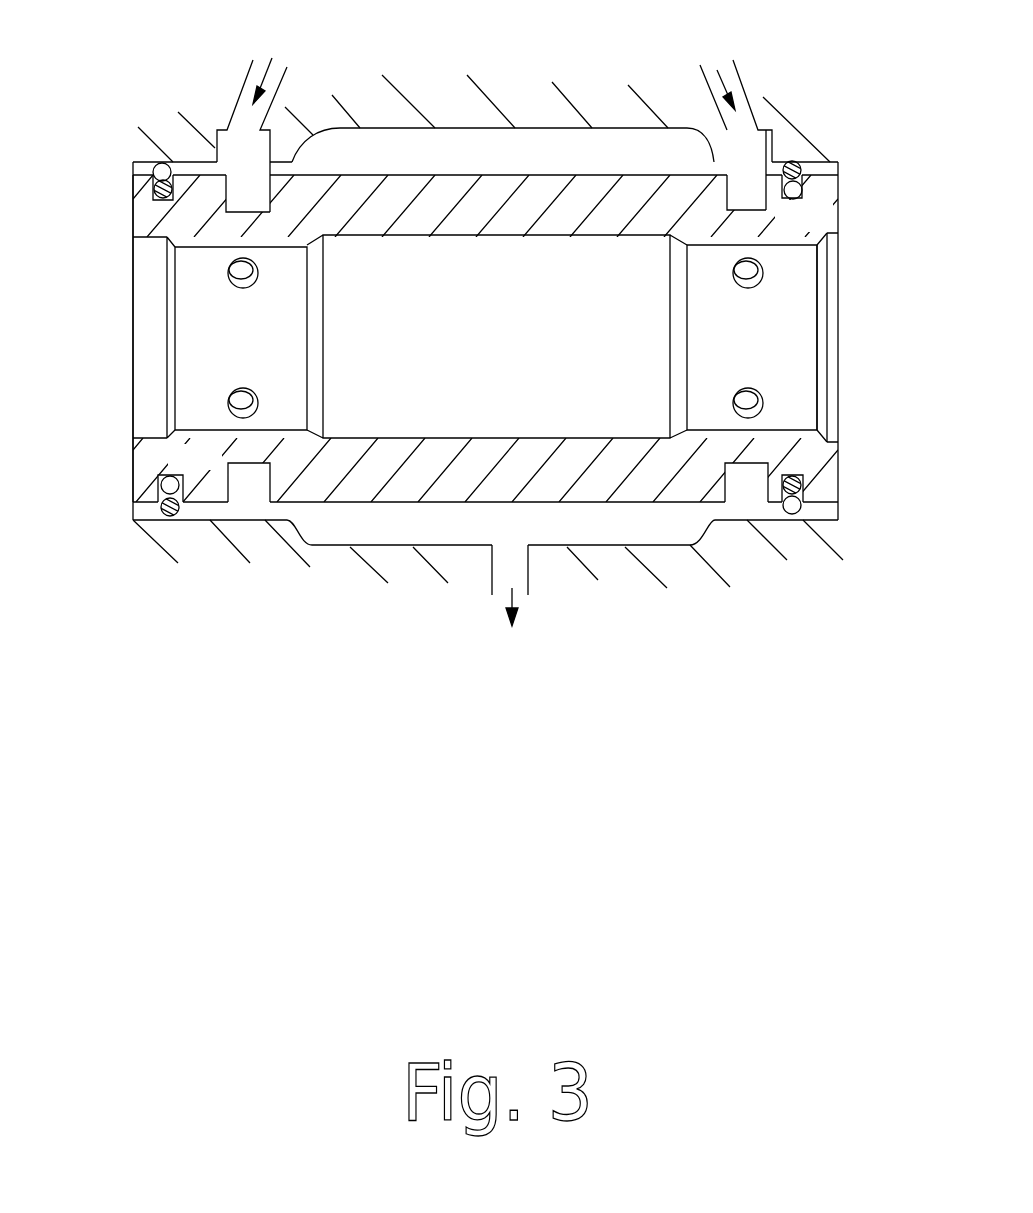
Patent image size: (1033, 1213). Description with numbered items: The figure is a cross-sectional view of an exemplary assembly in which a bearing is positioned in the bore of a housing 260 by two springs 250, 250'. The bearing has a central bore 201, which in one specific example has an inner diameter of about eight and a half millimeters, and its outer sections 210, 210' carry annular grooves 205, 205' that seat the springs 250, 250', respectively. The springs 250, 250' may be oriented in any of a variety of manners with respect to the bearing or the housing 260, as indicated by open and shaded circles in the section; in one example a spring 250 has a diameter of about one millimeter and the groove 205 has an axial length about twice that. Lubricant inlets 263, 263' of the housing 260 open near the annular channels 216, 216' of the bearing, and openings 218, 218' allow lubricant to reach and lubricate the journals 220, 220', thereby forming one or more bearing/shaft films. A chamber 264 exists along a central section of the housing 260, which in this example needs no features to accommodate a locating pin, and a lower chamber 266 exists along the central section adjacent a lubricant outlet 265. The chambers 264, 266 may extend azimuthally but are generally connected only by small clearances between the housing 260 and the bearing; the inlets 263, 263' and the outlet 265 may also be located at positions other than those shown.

The central bore 201 is at (428, 402).
The annular groove 205 is at (116, 328).
The annular groove 205' is at (856, 337).
The outer section 210 is at (331, 338).
The outer section 210' is at (661, 338).
The annular channel 216 is at (129, 338).
The annular channel 216' is at (842, 330).
The opening 218 is at (339, 338).
The opening 218' is at (655, 338).
The journal 220 is at (241, 338).
The journal 220' is at (752, 337).
The spring 250 is at (120, 338).
The spring 250' is at (845, 337).
The housing 260 is at (768, 70).
The lubricant inlet 263 is at (264, 115).
The lubricant inlet 263' is at (722, 118).
The chamber 264 is at (424, 160).
The lubricant outlet 265 is at (547, 667).
The lower chamber 266 is at (507, 534).